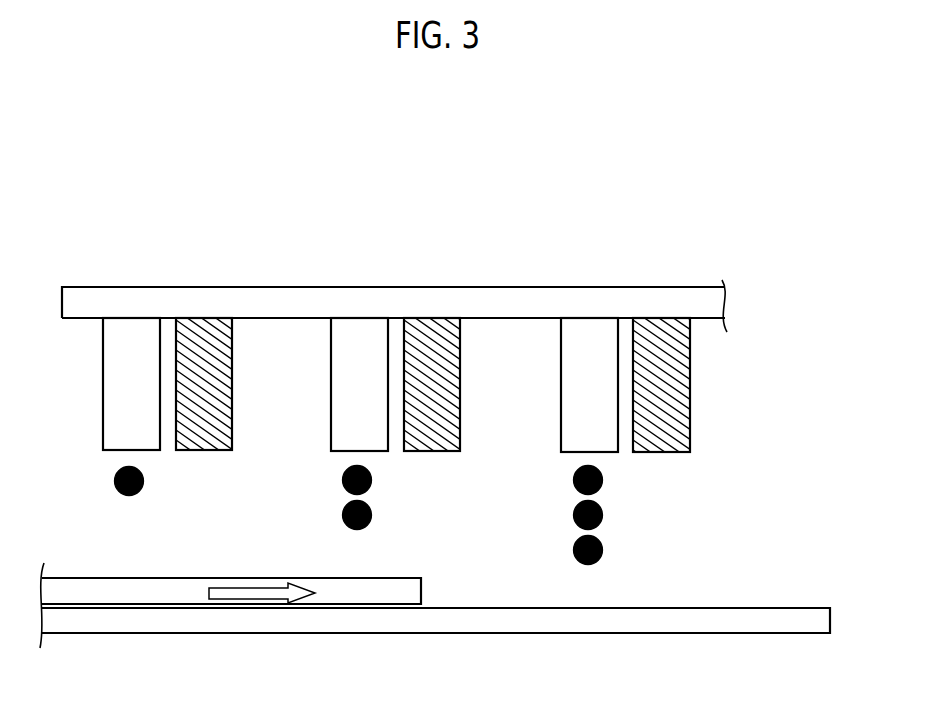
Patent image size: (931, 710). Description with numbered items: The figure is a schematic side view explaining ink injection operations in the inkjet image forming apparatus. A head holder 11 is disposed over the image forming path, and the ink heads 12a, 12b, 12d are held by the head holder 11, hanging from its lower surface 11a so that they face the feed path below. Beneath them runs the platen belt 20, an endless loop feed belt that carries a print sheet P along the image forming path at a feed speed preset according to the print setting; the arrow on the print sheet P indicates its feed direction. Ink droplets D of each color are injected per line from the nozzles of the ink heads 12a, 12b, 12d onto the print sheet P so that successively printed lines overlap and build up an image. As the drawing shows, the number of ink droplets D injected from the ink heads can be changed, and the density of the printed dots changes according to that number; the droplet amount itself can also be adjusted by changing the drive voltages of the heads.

The head holder 11 is at (258, 305).
The lower surface of head holder 11a is at (80, 320).
The ink head 12d is at (203, 330).
The ink head 12a is at (432, 330).
The ink head 12b is at (662, 367).
The ink droplets D is at (372, 515).
The print sheet P is at (177, 588).
The platen belt 20 is at (718, 592).